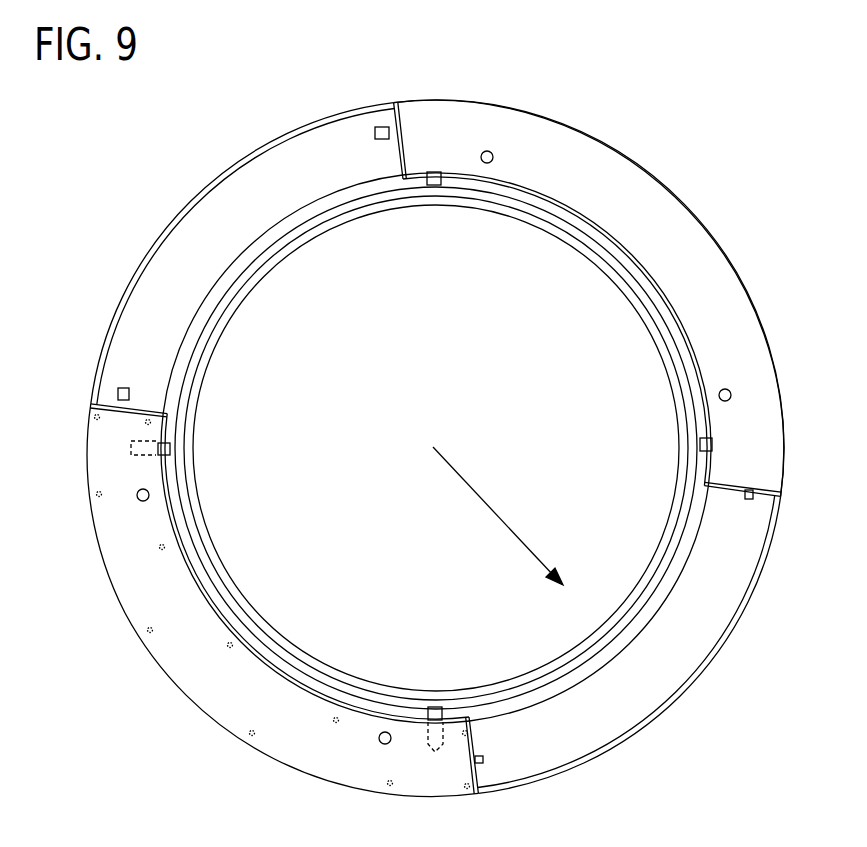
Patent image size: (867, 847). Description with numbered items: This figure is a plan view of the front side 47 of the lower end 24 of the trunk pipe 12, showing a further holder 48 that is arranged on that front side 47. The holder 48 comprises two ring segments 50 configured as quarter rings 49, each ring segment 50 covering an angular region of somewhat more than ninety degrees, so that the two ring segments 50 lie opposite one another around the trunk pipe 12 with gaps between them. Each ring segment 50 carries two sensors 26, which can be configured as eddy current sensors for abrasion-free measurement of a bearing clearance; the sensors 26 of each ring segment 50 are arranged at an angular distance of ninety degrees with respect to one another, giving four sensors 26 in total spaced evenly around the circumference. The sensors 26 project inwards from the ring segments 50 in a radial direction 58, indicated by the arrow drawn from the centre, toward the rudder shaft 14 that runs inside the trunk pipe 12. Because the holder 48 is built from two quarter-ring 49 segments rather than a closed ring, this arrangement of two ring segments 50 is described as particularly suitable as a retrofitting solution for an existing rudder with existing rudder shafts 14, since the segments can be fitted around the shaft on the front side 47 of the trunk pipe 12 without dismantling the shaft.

The trunk pipe 12 is at (121, 303).
The rudder shaft 14 is at (298, 250).
The lower end 24 is at (157, 240).
The sensor 26 is at (440, 184).
The front side 47 is at (236, 189).
The holder 48 is at (637, 157).
The quarter ring 49 is at (677, 196).
The ring segment 50 is at (719, 242).
The radial direction 58 is at (483, 500).